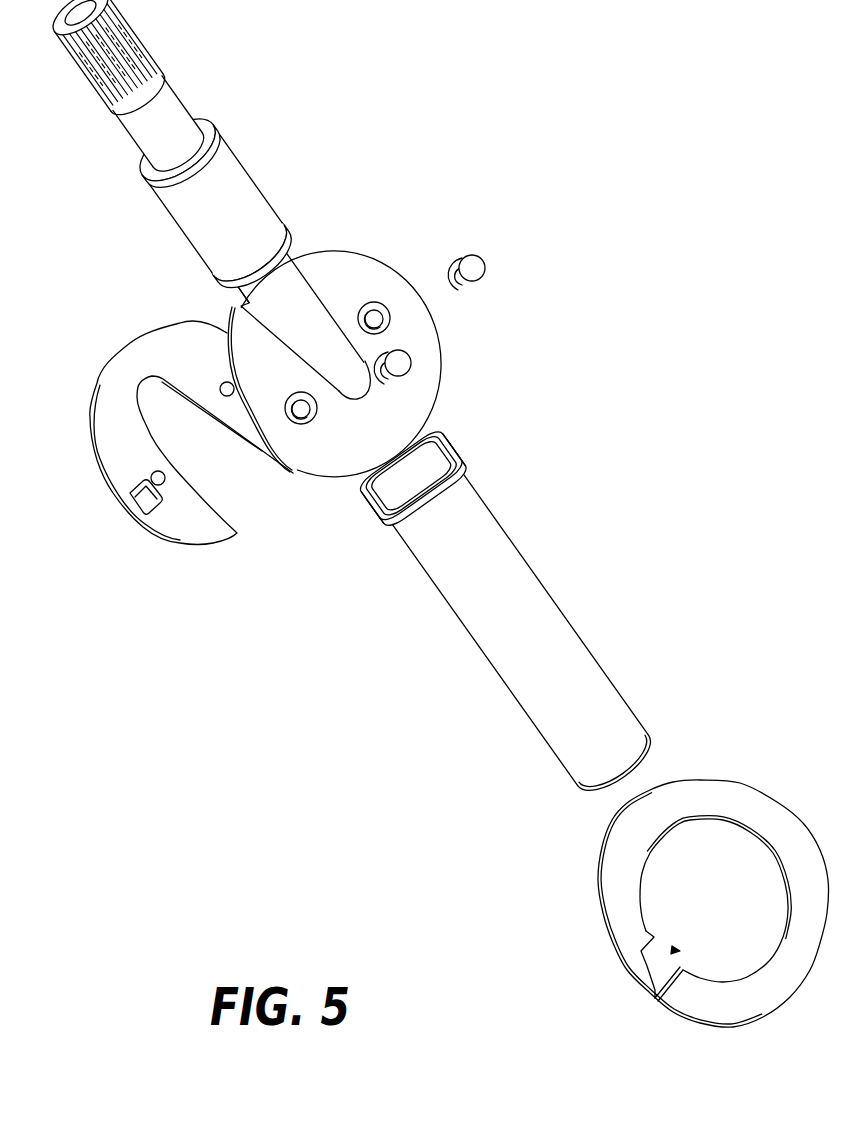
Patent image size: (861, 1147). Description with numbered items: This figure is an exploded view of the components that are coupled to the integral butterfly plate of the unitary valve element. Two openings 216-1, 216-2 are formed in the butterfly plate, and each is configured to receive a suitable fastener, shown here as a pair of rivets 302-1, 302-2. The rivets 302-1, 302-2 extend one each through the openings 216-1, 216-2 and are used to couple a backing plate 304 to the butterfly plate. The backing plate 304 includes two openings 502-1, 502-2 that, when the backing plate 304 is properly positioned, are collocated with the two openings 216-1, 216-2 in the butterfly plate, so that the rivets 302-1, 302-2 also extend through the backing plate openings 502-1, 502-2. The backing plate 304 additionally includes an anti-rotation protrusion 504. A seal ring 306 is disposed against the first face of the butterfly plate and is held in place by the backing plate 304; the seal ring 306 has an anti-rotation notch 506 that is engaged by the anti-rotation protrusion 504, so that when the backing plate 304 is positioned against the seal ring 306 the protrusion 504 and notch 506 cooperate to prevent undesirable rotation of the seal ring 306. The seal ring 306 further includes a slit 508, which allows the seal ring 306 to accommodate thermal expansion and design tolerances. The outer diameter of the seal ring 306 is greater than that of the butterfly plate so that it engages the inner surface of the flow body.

The opening 216-1 is at (376, 310).
The opening 216-2 is at (302, 425).
The rivet 302-1 is at (487, 262).
The rivet 302-2 is at (403, 363).
The backing plate 304 is at (178, 441).
The seal ring 306 is at (713, 915).
The backing plate opening 502-1 is at (165, 476).
The backing plate opening 502-2 is at (227, 383).
The anti-rotation protrusion 504 is at (143, 532).
The anti-rotation notch 506 is at (678, 950).
The slit 508 is at (656, 1001).